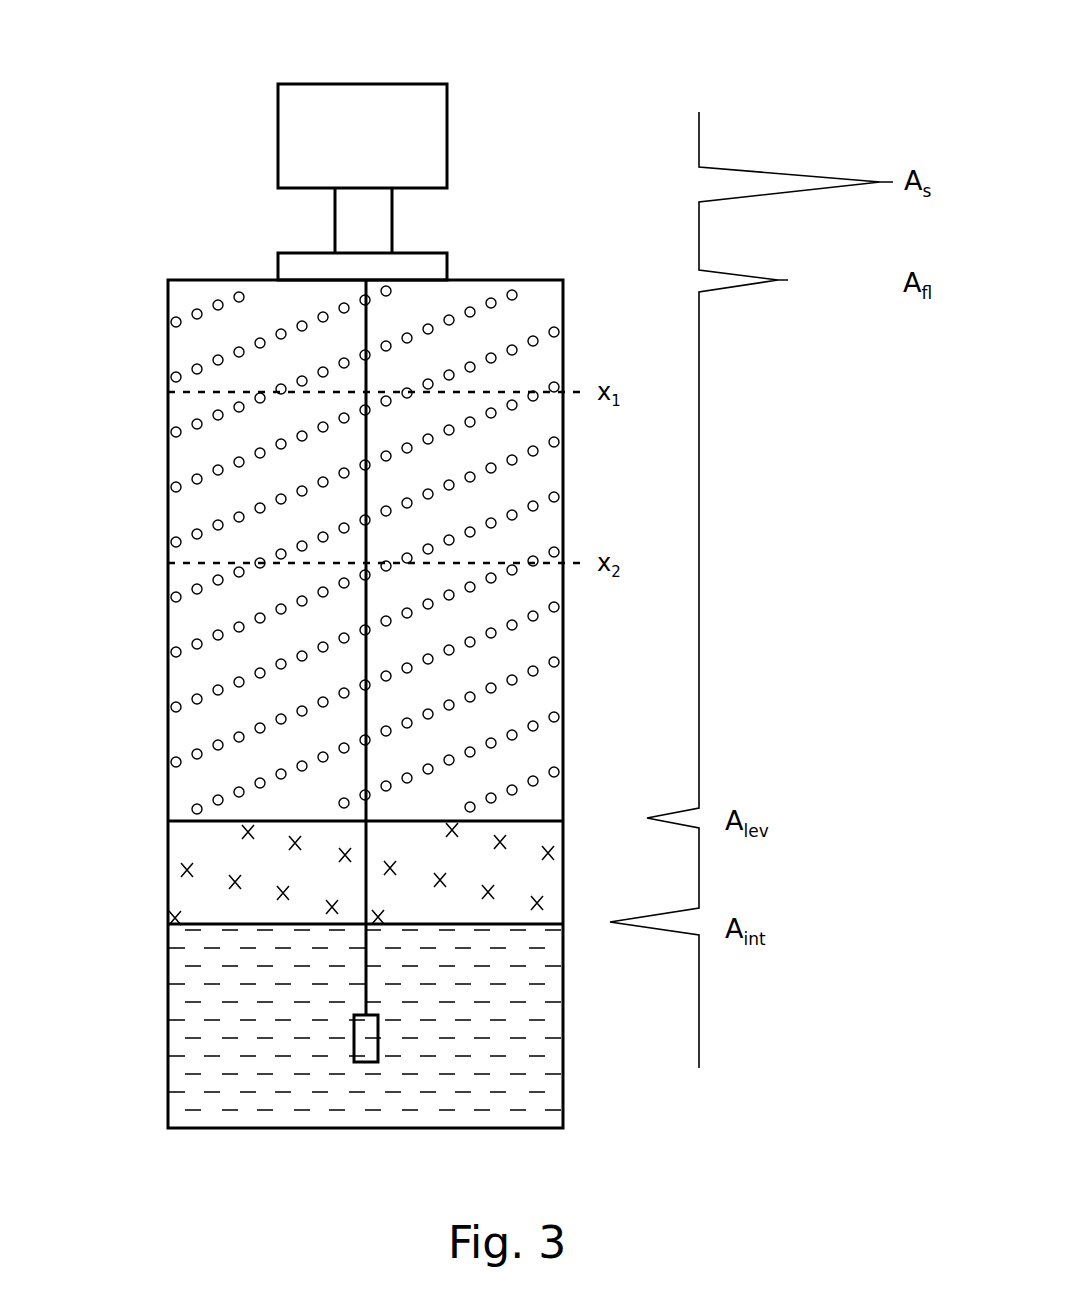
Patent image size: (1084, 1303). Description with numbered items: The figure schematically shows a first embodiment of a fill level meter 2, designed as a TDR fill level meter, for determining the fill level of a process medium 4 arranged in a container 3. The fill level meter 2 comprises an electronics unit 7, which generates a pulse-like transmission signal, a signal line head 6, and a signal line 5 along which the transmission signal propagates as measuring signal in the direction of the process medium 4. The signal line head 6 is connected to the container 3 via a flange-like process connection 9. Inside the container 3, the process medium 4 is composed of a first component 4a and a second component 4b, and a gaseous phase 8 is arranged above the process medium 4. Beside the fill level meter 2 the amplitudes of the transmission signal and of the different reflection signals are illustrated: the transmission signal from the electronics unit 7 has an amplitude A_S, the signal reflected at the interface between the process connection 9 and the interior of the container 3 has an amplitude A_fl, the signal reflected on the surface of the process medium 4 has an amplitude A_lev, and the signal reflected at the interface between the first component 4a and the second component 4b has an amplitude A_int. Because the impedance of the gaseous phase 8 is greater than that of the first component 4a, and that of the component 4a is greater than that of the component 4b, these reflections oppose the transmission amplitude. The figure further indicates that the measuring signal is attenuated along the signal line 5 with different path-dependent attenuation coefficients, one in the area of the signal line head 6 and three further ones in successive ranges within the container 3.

The fill level meter 2 is at (354, 531).
The container 3 is at (563, 737).
The process medium 4 is at (317, 945).
The first component 4a is at (187, 858).
The second component 4b is at (188, 1027).
The signal line 5 is at (366, 367).
The signal line head 6 is at (382, 222).
The electronics unit 7 is at (433, 121).
The gaseous phase 8 is at (203, 520).
The process connection 9 is at (272, 236).